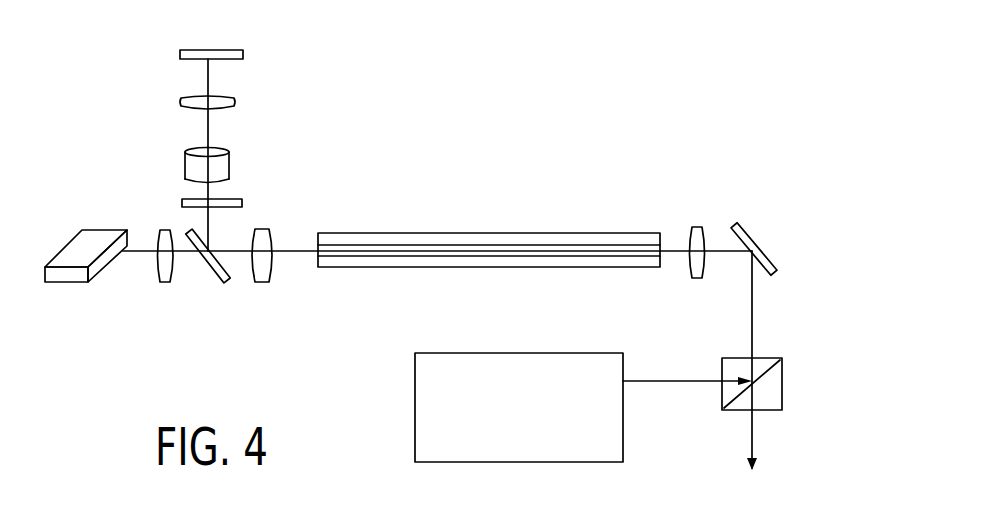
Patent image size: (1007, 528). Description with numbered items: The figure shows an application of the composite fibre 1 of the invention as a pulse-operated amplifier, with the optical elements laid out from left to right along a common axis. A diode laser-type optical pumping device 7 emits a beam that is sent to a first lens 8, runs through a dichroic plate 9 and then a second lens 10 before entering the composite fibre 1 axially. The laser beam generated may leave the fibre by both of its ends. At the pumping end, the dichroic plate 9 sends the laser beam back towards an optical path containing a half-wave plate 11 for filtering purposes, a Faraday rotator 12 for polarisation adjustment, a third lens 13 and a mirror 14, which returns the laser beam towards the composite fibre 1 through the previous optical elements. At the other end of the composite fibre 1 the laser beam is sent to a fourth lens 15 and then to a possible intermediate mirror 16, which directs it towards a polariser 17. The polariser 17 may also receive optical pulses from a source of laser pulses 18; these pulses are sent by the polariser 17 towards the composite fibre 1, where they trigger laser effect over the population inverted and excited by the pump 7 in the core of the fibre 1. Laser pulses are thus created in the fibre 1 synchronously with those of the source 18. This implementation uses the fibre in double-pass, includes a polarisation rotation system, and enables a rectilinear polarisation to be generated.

The composite fibre 1 is at (500, 230).
The optical pumping device 7 is at (75, 243).
The first lens 8 is at (157, 277).
The dichroic plate 9 is at (217, 274).
The second lens 10 is at (263, 282).
The half-wave plate 11 is at (182, 200).
The Faraday rotator 12 is at (185, 165).
The third lens 13 is at (182, 98).
The mirror 14 is at (192, 50).
The fourth lens 15 is at (701, 226).
The intermediate mirror 16 is at (754, 233).
The polariser 17 is at (782, 393).
The source of laser pulses 18 is at (573, 462).